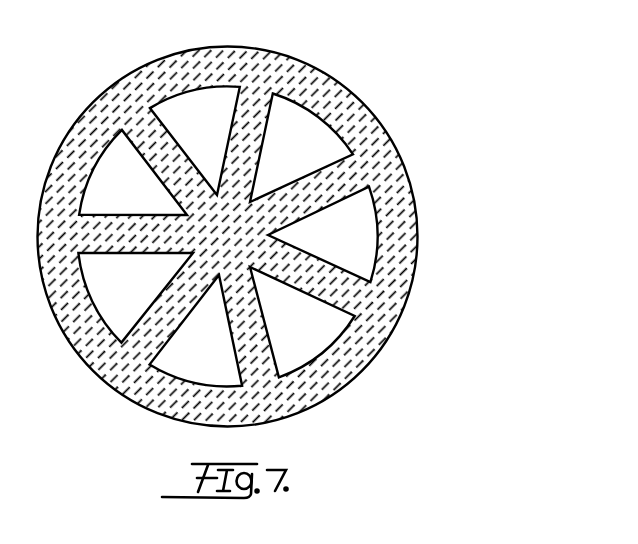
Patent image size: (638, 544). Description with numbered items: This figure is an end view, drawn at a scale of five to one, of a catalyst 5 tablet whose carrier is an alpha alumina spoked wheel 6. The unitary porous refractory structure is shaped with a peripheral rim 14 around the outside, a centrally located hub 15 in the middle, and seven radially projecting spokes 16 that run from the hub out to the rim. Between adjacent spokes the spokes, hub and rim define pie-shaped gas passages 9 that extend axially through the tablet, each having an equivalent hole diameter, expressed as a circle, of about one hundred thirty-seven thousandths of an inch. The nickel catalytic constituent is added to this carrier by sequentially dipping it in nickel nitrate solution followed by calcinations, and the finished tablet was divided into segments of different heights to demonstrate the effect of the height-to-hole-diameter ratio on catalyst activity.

The peripheral rim 14 is at (310, 74).
The catalyst 5 is at (423, 143).
The radially projecting spokes 16 is at (292, 187).
The centrally located hub 15 is at (249, 246).
The gas passages 9 is at (352, 249).
The spoked wheel 6 is at (393, 338).